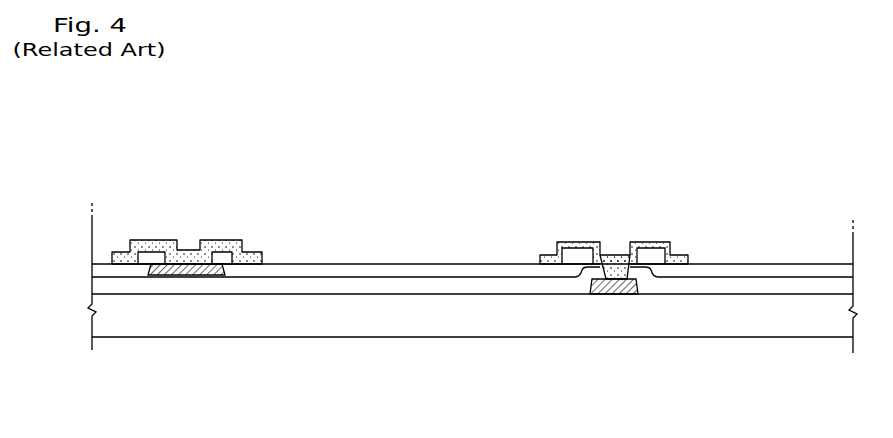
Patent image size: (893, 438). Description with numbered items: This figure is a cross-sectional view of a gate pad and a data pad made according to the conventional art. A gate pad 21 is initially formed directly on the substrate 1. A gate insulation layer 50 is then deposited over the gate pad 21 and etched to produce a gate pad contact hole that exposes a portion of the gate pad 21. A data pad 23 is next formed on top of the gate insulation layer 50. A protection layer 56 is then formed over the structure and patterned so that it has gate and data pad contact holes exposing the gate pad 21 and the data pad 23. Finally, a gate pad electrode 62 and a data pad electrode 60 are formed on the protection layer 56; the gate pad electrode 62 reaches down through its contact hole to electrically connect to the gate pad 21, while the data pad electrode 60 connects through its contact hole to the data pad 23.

The substrate 1 is at (485, 324).
The gate pad 21 is at (613, 297).
The data pad 23 is at (183, 276).
The gate insulation layer 50 is at (373, 287).
The protection layer 56 is at (414, 272).
The data pad electrode 60 is at (151, 240).
The gate pad electrode 62 is at (642, 243).